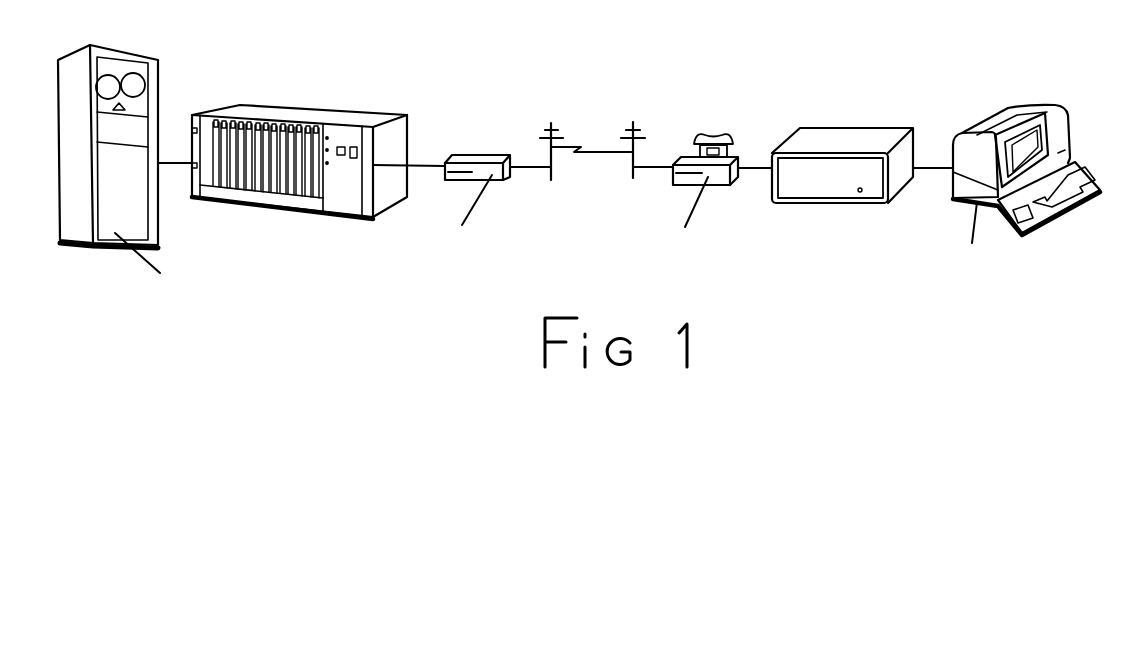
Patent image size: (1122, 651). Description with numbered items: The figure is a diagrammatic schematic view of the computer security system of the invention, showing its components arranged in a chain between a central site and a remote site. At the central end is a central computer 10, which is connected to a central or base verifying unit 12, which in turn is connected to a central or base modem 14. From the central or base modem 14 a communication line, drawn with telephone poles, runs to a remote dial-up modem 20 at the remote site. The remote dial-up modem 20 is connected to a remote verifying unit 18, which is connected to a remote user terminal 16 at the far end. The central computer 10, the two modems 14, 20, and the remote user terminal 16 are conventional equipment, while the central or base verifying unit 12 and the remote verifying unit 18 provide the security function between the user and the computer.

The central computer 10 is at (137, 53).
The central or base verifying unit 12 is at (300, 108).
The central or base modem 14 is at (465, 151).
The remote user terminal 16 is at (1051, 108).
The remote verifying unit 18 is at (855, 128).
The remote dial-up modem 20 is at (733, 157).